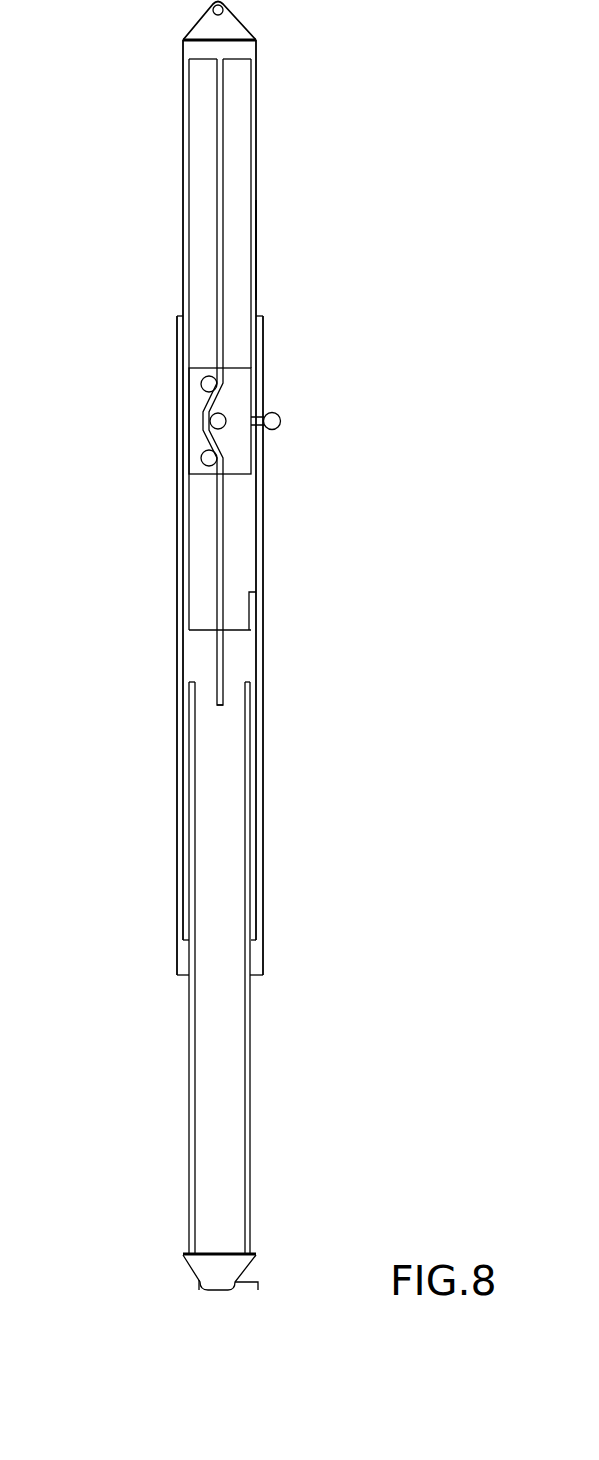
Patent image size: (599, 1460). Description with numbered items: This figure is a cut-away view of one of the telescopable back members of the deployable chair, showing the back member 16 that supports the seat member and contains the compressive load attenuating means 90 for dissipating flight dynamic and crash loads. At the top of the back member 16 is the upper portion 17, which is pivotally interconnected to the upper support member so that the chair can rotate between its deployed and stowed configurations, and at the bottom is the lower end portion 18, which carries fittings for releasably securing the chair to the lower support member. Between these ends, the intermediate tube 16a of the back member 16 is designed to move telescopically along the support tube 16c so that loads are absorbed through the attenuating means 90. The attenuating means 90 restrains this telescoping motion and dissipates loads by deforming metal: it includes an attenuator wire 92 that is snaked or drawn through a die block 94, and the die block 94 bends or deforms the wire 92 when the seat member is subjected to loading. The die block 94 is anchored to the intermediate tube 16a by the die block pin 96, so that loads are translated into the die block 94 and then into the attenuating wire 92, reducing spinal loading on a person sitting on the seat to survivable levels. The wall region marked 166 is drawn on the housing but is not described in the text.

The back member 16 is at (170, 537).
The intermediate tube 16a is at (258, 572).
The telescoping support tube 16c is at (250, 1017).
The upper portion 17 is at (258, 16).
The lower end portion 18 is at (258, 1268).
The compressive load attenuating means 90 is at (230, 678).
The attenuator wire 92 is at (217, 222).
The die block 94 is at (237, 400).
The die block pin 96 is at (278, 428).
The housing wall 166 is at (256, 242).